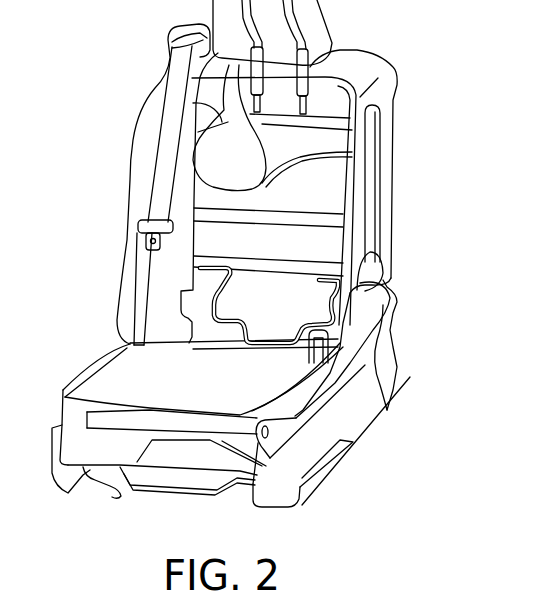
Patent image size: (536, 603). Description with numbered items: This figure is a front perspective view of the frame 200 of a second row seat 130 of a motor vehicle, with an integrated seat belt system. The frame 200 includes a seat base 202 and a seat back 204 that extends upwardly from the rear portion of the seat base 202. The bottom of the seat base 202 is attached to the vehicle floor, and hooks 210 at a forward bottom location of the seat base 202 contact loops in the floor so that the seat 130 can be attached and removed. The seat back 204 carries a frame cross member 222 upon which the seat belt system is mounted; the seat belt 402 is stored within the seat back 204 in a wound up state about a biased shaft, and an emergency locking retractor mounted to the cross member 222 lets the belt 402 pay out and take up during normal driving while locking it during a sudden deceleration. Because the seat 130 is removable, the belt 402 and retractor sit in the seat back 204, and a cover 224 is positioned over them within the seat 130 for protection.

The frame 200 is at (115, 185).
The second row seat 130 is at (400, 72).
The frame cross member 222 is at (326, 137).
The seat back 204 is at (362, 180).
The seat base 202 is at (363, 400).
The hooks 210 is at (120, 496).
The cover 224 is at (195, 108).
The seat belt 402 is at (167, 148).